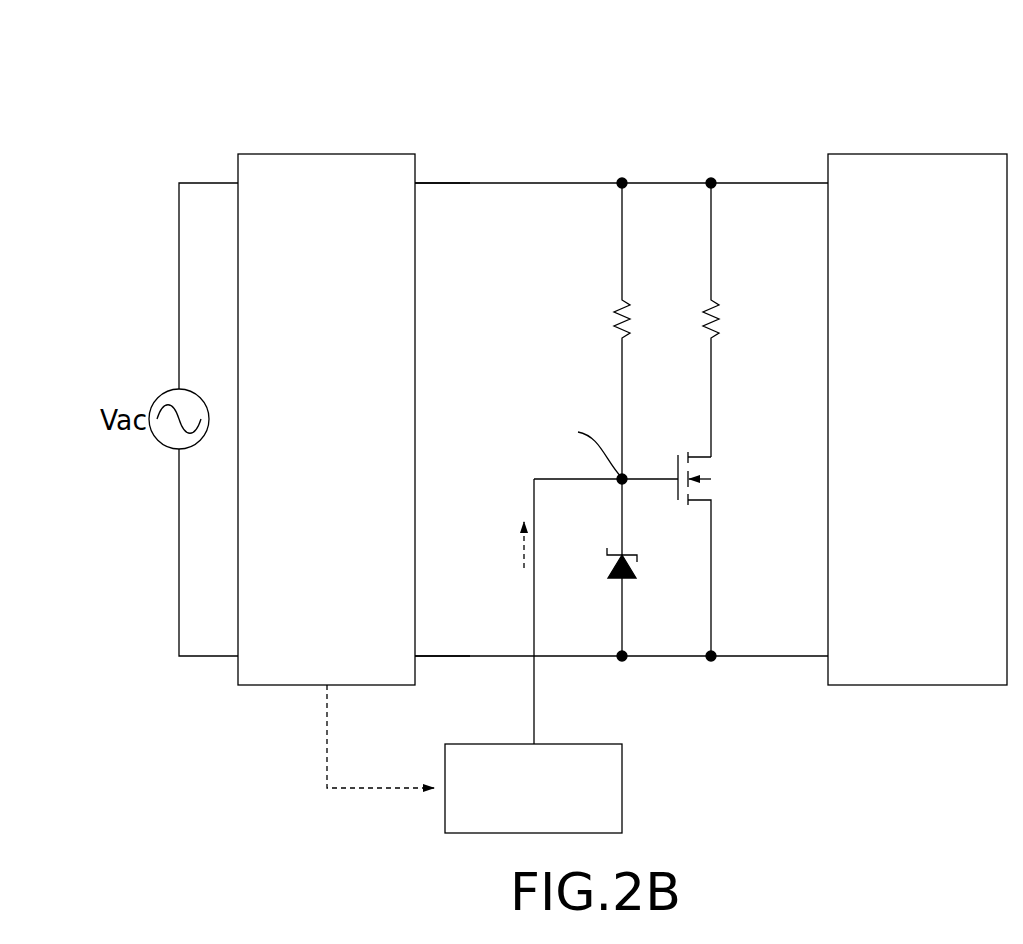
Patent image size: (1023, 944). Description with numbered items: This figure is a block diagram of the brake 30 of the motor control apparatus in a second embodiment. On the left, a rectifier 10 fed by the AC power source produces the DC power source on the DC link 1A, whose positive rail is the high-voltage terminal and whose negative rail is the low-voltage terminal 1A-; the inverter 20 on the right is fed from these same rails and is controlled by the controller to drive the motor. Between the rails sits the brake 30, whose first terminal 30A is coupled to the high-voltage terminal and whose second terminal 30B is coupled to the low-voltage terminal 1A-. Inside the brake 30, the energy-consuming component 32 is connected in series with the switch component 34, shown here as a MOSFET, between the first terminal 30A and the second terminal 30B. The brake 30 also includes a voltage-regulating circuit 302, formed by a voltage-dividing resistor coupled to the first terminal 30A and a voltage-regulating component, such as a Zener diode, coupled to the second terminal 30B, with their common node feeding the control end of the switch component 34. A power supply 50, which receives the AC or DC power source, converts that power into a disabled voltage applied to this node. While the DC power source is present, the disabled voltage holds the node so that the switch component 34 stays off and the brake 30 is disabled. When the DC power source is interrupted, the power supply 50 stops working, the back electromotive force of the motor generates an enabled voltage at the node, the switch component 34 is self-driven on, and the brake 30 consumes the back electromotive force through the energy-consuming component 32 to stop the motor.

The rectifier 10 is at (327, 158).
The inverter 20 is at (917, 160).
The brake 30 is at (786, 80).
The first terminal 30A is at (711, 172).
The second terminal 30B is at (711, 668).
The energy-consuming component 32 is at (723, 310).
The switch component 34 is at (712, 468).
The voltage-regulating circuit 302 is at (568, 360).
The power supply 50 is at (545, 750).
The DC link 1A is at (428, 148).
The low-voltage terminal 1A- is at (445, 660).